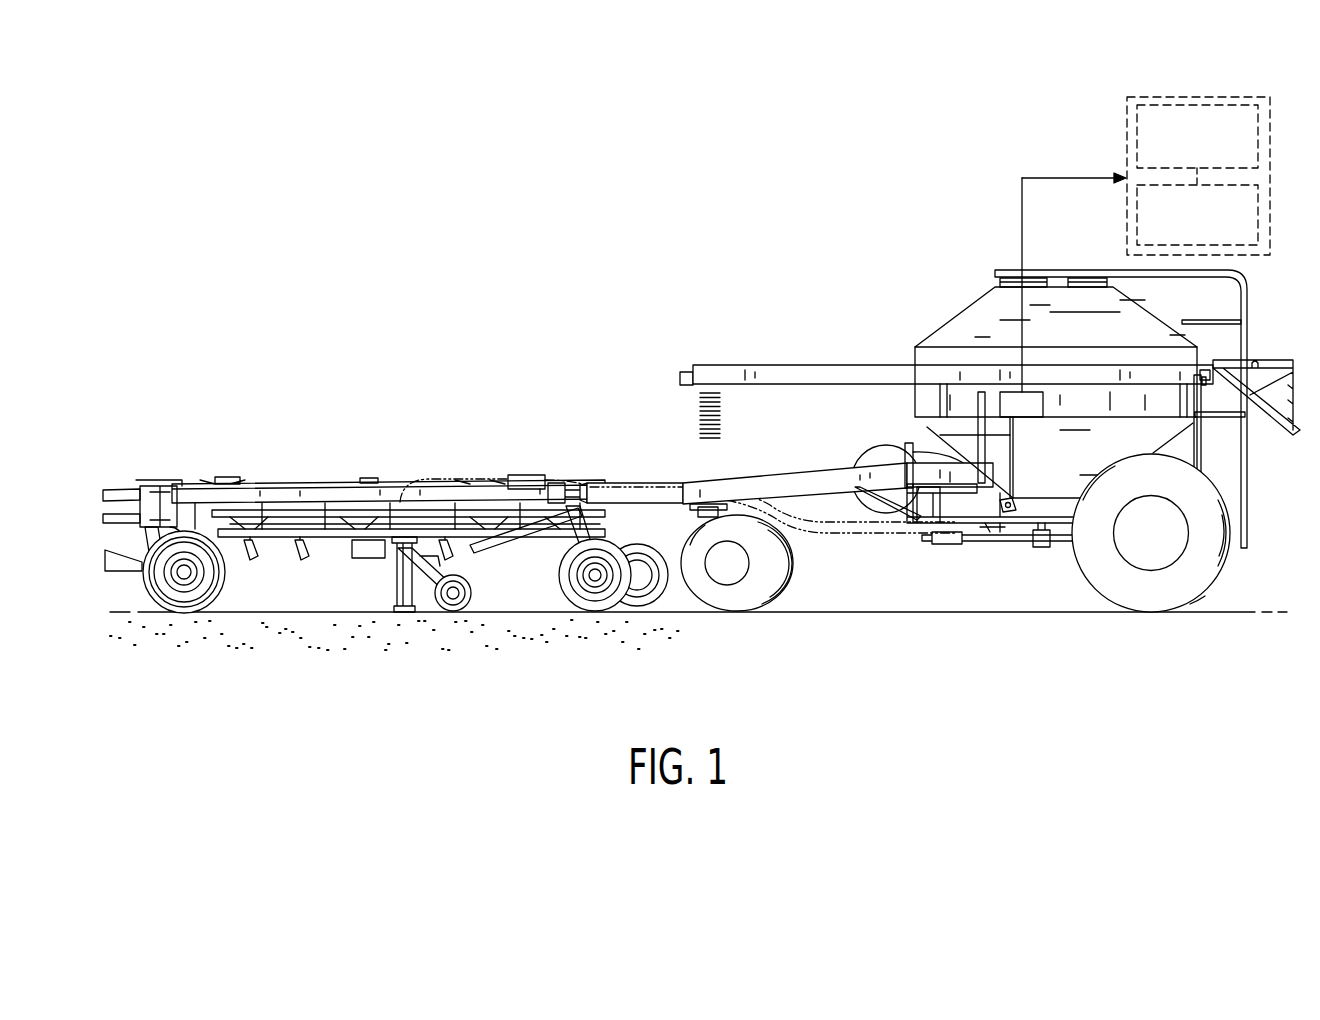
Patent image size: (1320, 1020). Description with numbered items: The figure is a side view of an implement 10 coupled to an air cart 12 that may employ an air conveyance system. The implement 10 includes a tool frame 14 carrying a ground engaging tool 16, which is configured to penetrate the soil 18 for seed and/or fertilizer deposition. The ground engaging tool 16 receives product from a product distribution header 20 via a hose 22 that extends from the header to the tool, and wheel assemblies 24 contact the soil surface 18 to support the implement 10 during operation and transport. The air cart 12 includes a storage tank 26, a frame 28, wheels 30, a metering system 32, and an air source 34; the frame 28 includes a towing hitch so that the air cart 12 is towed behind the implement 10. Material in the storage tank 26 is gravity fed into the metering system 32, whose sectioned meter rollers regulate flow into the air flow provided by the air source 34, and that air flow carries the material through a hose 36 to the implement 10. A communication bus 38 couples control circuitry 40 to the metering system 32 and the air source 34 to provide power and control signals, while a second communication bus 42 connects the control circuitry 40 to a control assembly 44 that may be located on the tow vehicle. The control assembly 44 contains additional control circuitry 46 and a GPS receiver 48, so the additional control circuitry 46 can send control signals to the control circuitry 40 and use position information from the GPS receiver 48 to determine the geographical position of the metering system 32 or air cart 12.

The implement 10 is at (354, 480).
The air cart 12 is at (990, 376).
The tool frame 14 is at (393, 484).
The ground engaging tool 16 is at (400, 608).
The soil 18 is at (502, 605).
The product distribution header 20 is at (538, 476).
The hose 22 is at (458, 478).
The wheel assemblies 24 is at (180, 614).
The storage tank 26 is at (981, 308).
The frame 28 is at (793, 472).
The wheels 30 is at (794, 565).
The metering system 32 is at (1016, 512).
The air source 34 is at (862, 448).
The hose 36 is at (850, 532).
The communication bus 38 is at (1010, 437).
The control circuitry 40 is at (1007, 393).
The second communication bus 42 is at (1021, 222).
The control assembly 44 is at (1186, 190).
The additional control circuitry 46 is at (1260, 137).
The GPS receiver 48 is at (1137, 215).